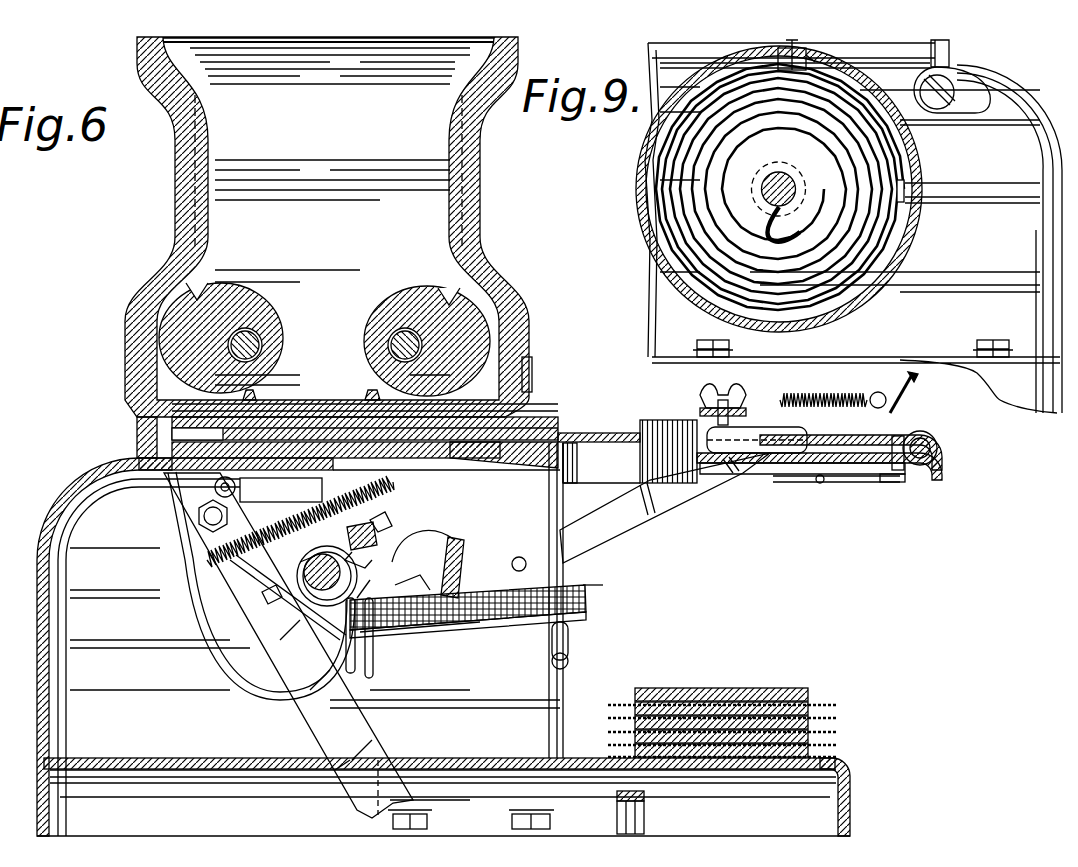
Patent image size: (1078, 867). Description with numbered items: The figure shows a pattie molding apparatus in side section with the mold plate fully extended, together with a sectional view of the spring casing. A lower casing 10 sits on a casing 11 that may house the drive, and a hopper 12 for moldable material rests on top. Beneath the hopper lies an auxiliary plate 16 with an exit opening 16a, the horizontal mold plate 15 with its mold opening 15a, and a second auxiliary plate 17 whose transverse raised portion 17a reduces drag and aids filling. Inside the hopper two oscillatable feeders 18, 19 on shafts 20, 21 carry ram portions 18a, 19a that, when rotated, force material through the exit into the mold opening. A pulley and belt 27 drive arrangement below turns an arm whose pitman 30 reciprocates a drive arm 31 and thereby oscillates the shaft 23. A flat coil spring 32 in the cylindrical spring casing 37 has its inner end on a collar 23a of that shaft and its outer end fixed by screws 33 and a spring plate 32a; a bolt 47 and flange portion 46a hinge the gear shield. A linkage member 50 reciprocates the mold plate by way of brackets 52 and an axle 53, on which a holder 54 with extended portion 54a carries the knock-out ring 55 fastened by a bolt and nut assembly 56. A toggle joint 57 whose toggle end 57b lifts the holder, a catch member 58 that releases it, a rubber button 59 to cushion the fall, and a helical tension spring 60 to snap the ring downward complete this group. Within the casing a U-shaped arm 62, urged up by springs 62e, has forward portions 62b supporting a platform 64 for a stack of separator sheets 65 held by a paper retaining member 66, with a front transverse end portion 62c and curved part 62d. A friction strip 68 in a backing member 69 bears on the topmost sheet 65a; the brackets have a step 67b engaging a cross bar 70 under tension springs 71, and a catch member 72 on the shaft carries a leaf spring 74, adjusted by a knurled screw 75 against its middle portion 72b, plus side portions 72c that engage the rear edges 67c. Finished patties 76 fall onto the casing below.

In FIG. 6, the lower casing 10 is at (92, 495).
In FIG. 9, the lower casing 10 is at (645, 135).
In FIG. 6, the casing 11 is at (136, 792).
In FIG. 9, the casing 11 is at (1025, 387).
In FIG. 6, the hopper 12 is at (238, 172).
In FIG. 6, the mold plate 15 is at (575, 433).
In FIG. 6, the mold opening 15a is at (630, 433).
In FIG. 6, the auxiliary plate 16 is at (540, 417).
In FIG. 6, the exit opening 16a is at (350, 415).
In FIG. 6, the second auxiliary plate 17 is at (172, 450).
In FIG. 6, the transverse raised portion 17a is at (300, 428).
In FIG. 6, the oscillatable feeder 18 is at (265, 318).
In FIG. 6, the ram portion 18a is at (210, 290).
In FIG. 6, the oscillatable feeder 19 is at (395, 320).
In FIG. 6, the ram portion 19a is at (447, 300).
In FIG. 6, the shaft 20 is at (258, 340).
In FIG. 6, the shaft 21 is at (395, 345).
In FIG. 6, the shaft 23 is at (305, 620).
In FIG. 9, the shaft 23 is at (760, 198).
In FIG. 9, the collar 23a is at (750, 172).
In FIG. 6, the pulley and belt 27 is at (645, 798).
In FIG. 6, the pitman 30 is at (322, 718).
In FIG. 6, the drive arm 31 is at (200, 548).
In FIG. 9, the coil spring 32 is at (850, 236).
In FIG. 9, the spring plate 32a is at (903, 184).
In FIG. 9, the screws 33 is at (810, 57).
In FIG. 9, the spring casing 37 is at (858, 306).
In FIG. 9, the flange portion 46a is at (983, 108).
In FIG. 9, the bolt 47 is at (962, 90).
In FIG. 6, the linkage member 50 is at (760, 474).
In FIG. 6, the brackets 52 is at (945, 448).
In FIG. 6, the axle 53 is at (930, 462).
In FIG. 6, the holder 54 is at (940, 430).
In FIG. 6, the extended portion 54a is at (830, 400).
In FIG. 6, the knock-out ring 55 is at (660, 420).
In FIG. 6, the bolt and nut assembly 56 is at (718, 392).
In FIG. 6, the toggle joint 57 is at (676, 518).
In FIG. 6, the toggle end 57b is at (885, 482).
In FIG. 6, the catch member 58 is at (914, 378).
In FIG. 6, the rubber button 59 is at (855, 482).
In FIG. 6, the helical tension spring 60 is at (875, 394).
In FIG. 6, the U-shaped arm 62 is at (200, 612).
In FIG. 6, the forward portions 62b is at (470, 632).
In FIG. 6, the front transverse end portion 62c is at (572, 638).
In FIG. 6, the curved part 62d is at (570, 662).
In FIG. 6, the springs 62e is at (281, 490).
In FIG. 6, the platform 64 is at (515, 622).
In FIG. 6, the stack of separator sheets 65 is at (570, 587).
In FIG. 6, the topmost sheet 65a is at (836, 732).
In FIG. 6, the paper retaining member 66 is at (382, 676).
In FIG. 6, the step 67b is at (385, 518).
In FIG. 6, the rear edges 67c is at (300, 600).
In FIG. 6, the friction strip 68 is at (462, 585).
In FIG. 6, the backing member 69 is at (455, 548).
In FIG. 6, the cross bar 70 is at (365, 500).
In FIG. 6, the tension springs 71 is at (413, 560).
In FIG. 6, the catch member 72 is at (360, 540).
In FIG. 6, the middle portion 72b is at (440, 578).
In FIG. 6, the side portions 72c is at (300, 562).
In FIG. 6, the leaf spring 74 is at (405, 580).
In FIG. 6, the knurled screw 75 is at (390, 548).
In FIG. 6, the pattie 76 is at (782, 710).